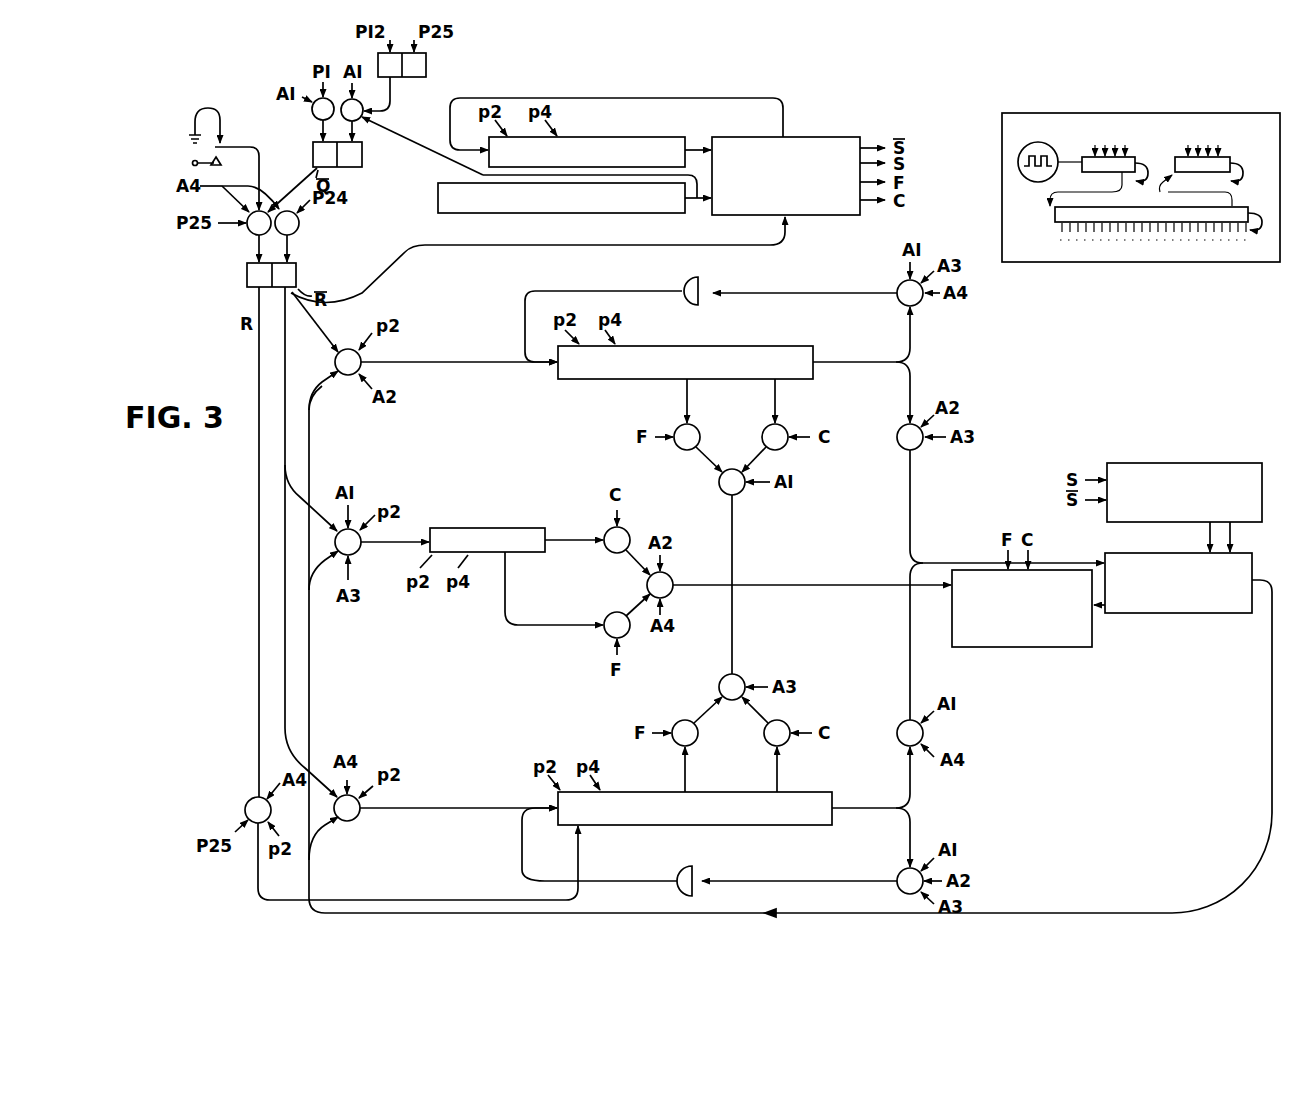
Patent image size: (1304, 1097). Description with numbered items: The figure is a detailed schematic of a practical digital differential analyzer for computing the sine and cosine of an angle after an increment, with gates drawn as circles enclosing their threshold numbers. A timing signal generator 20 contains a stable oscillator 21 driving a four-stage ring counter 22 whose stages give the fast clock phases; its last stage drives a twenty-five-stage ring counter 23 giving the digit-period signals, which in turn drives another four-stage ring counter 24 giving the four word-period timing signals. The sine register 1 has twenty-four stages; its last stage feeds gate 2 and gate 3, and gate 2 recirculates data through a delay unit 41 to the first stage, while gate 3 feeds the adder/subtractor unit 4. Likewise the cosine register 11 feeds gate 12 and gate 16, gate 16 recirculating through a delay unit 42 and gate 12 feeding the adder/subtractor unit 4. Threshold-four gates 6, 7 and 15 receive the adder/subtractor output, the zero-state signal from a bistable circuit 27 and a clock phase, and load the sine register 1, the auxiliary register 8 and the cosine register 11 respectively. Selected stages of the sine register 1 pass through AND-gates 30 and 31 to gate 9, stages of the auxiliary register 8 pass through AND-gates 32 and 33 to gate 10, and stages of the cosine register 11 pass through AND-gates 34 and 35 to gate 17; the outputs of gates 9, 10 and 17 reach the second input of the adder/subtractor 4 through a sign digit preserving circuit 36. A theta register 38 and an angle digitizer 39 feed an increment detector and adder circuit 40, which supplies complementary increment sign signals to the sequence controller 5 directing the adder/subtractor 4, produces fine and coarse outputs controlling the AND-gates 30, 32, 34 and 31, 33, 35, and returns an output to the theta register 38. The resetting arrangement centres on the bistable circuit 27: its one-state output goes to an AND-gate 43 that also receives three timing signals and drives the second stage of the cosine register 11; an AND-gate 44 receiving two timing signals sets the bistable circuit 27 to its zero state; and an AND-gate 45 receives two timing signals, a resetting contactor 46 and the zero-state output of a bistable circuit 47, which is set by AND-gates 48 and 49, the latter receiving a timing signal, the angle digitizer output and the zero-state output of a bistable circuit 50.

The sine register 1 is at (577, 381).
The gate 2 is at (920, 303).
The gate 3 is at (900, 447).
The adder/subtractor unit 4 is at (1190, 614).
The sequence controller 5 is at (1135, 523).
The gate 6 is at (335, 363).
The gate 7 is at (358, 552).
The auxiliary register 8 is at (540, 528).
The gate 9 is at (741, 492).
The gate 10 is at (670, 577).
The cosine register 11 is at (638, 791).
The gate 12 is at (897, 733).
The gate 15 is at (357, 820).
The gate 16 is at (899, 876).
The gate 17 is at (742, 676).
The timing signal generator 20 is at (1141, 199).
The stable oscillator 21 is at (1031, 178).
The four-stage ring counter 22 is at (1135, 162).
The twenty-five-stage ring counter 23 is at (1055, 214).
The four-stage ring counter 24 is at (1232, 157).
The bistable circuit 27 is at (247, 276).
The AND-gate 30 is at (678, 448).
The AND-gate 31 is at (784, 447).
The AND-gate 32 is at (608, 618).
The AND-gate 33 is at (608, 548).
The AND-gate 34 is at (694, 742).
The AND-gate 35 is at (786, 742).
The sign digit preserving circuit 36 is at (1035, 648).
The theta register 38 is at (685, 137).
The angle digitizer 39 is at (446, 214).
The increment detector and adder circuit 40 is at (852, 216).
The delay unit 41 is at (690, 306).
The delay unit 42 is at (690, 867).
The AND-gate 43 is at (245, 805).
The AND-gate 44 is at (297, 232).
The AND-gate 45 is at (250, 232).
The resetting contactor 46 is at (215, 147).
The bistable circuit 47 is at (313, 158).
The AND-gate 48 is at (314, 119).
The AND-gate 49 is at (359, 121).
The bistable circuit 50 is at (415, 68).